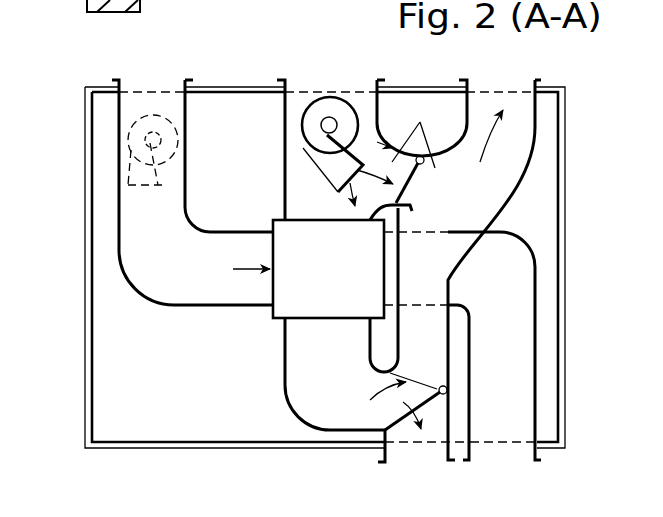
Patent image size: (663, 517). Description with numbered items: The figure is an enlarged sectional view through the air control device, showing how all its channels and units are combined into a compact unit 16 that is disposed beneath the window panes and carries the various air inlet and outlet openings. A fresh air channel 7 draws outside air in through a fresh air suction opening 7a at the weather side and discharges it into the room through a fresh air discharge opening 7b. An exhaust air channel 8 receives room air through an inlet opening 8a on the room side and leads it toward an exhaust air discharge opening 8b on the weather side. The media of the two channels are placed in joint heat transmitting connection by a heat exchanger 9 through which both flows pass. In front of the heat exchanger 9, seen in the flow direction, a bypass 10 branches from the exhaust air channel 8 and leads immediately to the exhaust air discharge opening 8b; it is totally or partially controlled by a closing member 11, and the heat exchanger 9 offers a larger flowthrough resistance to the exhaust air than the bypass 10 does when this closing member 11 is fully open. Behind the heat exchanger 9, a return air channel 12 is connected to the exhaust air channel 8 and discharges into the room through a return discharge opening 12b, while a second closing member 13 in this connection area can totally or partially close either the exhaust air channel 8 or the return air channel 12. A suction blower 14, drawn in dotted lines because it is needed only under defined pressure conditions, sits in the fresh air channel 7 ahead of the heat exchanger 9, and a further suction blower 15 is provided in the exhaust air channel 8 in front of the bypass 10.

The fresh air channel 7 is at (161, 263).
The fresh air suction opening 7a is at (150, 44).
The fresh air discharge opening 7b is at (502, 388).
The exhaust air channel 8 is at (309, 201).
The inlet opening 8a is at (328, 42).
The exhaust air discharge opening 8b is at (500, 106).
The heat exchanger 9 is at (353, 266).
The bypass 10 is at (422, 124).
The closing member 11 is at (406, 193).
The return air channel 12 is at (400, 430).
The return discharge opening 12b is at (427, 458).
The second closing member 13 is at (390, 421).
The suction blower 14 is at (143, 170).
The suction blower 15 is at (302, 145).
The compact unit 16 is at (82, 344).